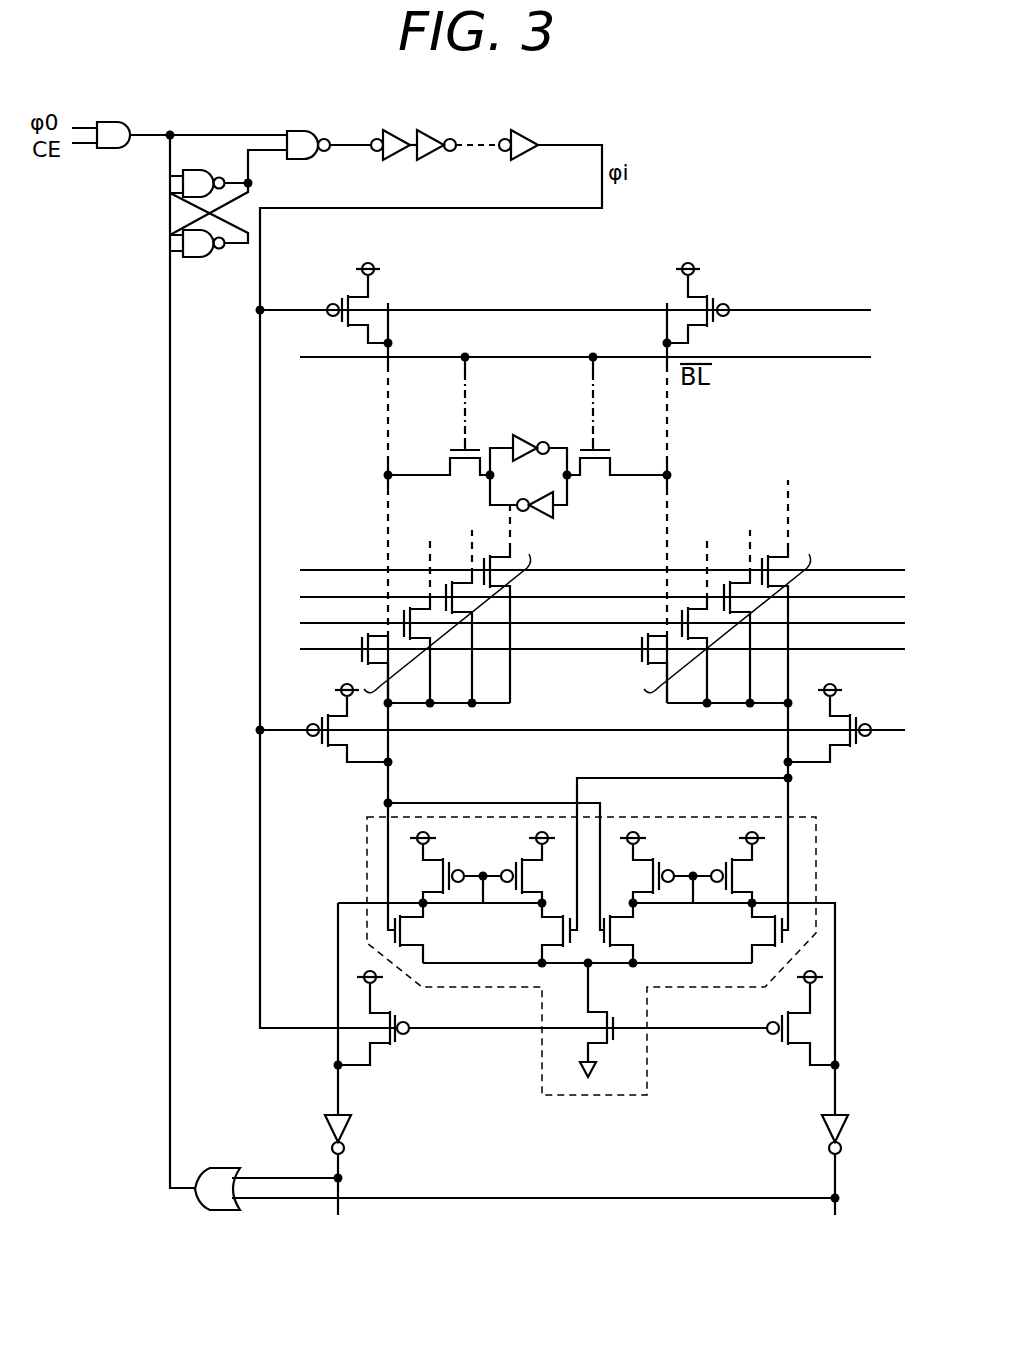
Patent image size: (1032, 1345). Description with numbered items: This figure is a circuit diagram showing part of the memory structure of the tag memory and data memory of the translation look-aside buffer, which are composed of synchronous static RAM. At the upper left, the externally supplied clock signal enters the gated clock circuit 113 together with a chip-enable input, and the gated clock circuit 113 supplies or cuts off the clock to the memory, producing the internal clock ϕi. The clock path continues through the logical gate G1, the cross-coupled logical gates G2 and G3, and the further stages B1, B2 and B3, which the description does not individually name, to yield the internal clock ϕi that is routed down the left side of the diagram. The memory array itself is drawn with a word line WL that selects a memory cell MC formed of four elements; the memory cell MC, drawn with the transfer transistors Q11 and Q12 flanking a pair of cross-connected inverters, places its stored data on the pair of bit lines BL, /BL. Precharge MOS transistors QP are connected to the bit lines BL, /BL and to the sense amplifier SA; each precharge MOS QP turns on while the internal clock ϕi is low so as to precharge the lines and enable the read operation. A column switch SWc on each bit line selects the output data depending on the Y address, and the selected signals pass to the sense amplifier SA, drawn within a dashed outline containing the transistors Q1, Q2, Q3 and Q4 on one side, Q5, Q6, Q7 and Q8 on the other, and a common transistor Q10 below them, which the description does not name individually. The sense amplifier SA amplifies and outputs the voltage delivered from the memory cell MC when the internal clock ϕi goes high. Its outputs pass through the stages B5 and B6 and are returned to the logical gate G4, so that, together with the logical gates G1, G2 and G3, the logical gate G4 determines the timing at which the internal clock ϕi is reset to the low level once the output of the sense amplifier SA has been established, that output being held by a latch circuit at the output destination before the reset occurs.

The gated clock circuit 113 is at (113, 120).
The logical gate G1 is at (308, 130).
The logical gate G2 is at (203, 170).
The logical gate G3 is at (203, 258).
The logical gate G4 is at (217, 1206).
The buffer/inverter B1 is at (393, 130).
The buffer/inverter B2 is at (436, 130).
The buffer/inverter B3 is at (522, 130).
The output inverter B5 is at (357, 1134).
The output inverter B6 is at (854, 1134).
The precharge MOSFET QP is at (378, 292).
The bit line BL is at (373, 616).
The word line WL is at (587, 370).
The memory cell MC is at (527, 437).
The memory cell transfer transistor Q11 is at (439, 432).
The memory cell transfer transistor Q12 is at (566, 408).
The column switch SWc is at (457, 640).
The sense amplifier SA is at (816, 855).
The sense amplifier NMOS transistor Q1 is at (425, 933).
The sense amplifier PMOS transistor Q2 is at (428, 867).
The sense amplifier PMOS transistor Q3 is at (537, 867).
The sense amplifier NMOS transistor Q4 is at (541, 933).
The sense amplifier NMOS transistor Q5 is at (635, 933).
The sense amplifier PMOS transistor Q6 is at (639, 867).
The sense amplifier NMOS transistor Q7 is at (752, 933).
The sense amplifier PMOS transistor Q8 is at (746, 867).
The sense amplifier current source transistor Q10 is at (611, 1020).